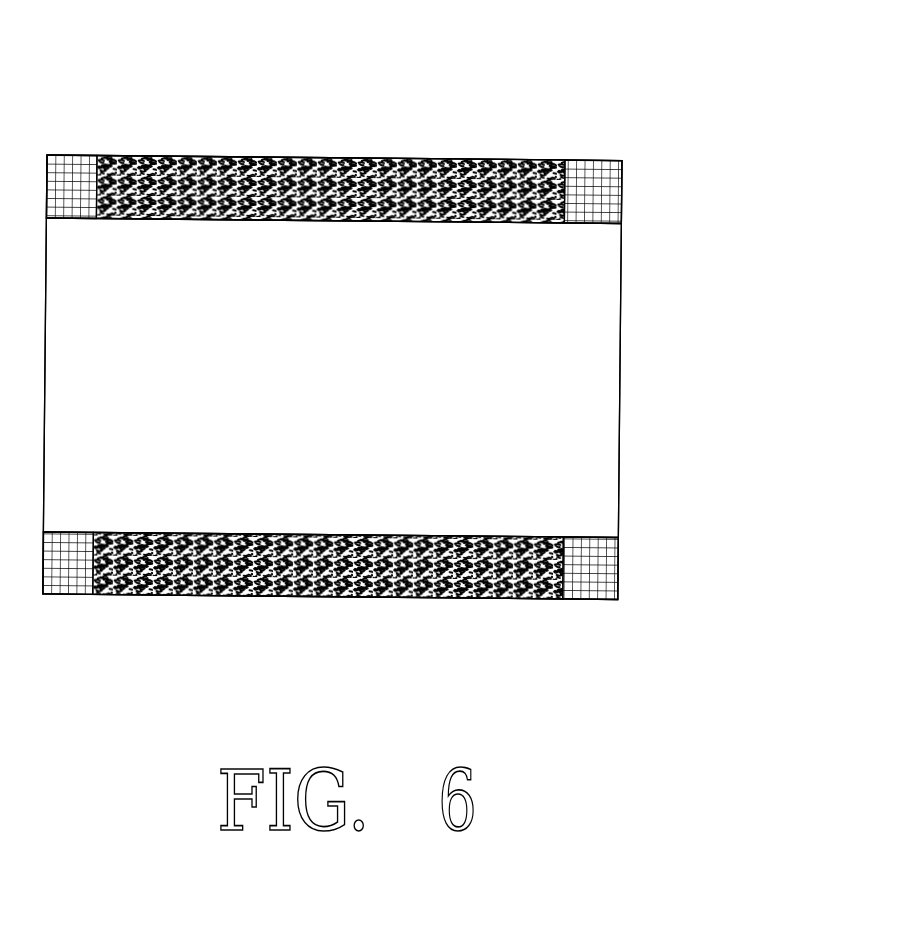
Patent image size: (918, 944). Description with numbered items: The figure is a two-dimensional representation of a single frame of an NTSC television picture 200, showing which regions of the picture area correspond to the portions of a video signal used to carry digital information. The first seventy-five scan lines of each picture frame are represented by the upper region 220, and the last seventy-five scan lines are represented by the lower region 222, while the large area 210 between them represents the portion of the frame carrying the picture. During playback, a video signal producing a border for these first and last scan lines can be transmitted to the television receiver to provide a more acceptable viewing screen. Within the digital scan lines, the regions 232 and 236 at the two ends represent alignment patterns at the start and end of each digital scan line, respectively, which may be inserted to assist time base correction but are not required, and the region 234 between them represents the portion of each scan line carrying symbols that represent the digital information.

The NTSC television picture 200 is at (210, 115).
The area carrying the picture 210 is at (622, 402).
The region of first scan lines 220 is at (625, 193).
The region of last scan lines 222 is at (620, 565).
The alignment pattern region at start of digital scan line 232 is at (63, 595).
The digital information region 234 is at (318, 600).
The alignment pattern region at end of digital scan line 236 is at (588, 603).